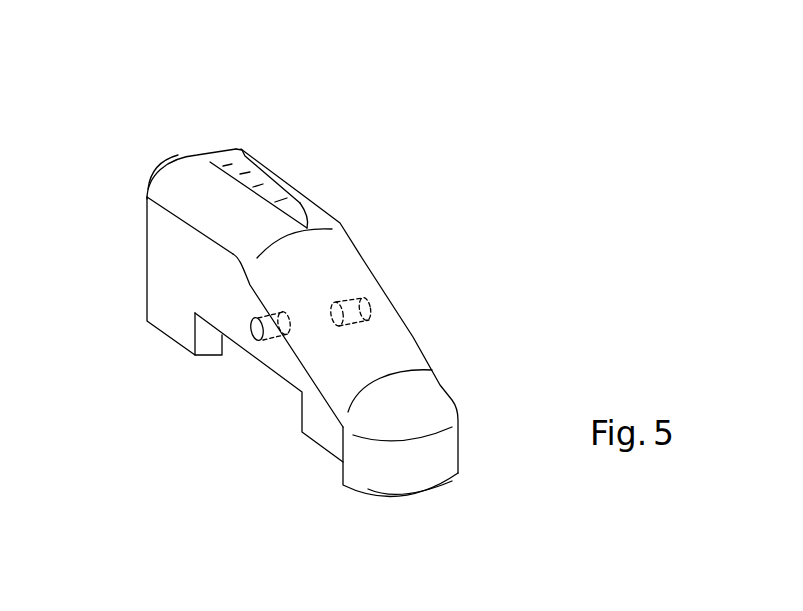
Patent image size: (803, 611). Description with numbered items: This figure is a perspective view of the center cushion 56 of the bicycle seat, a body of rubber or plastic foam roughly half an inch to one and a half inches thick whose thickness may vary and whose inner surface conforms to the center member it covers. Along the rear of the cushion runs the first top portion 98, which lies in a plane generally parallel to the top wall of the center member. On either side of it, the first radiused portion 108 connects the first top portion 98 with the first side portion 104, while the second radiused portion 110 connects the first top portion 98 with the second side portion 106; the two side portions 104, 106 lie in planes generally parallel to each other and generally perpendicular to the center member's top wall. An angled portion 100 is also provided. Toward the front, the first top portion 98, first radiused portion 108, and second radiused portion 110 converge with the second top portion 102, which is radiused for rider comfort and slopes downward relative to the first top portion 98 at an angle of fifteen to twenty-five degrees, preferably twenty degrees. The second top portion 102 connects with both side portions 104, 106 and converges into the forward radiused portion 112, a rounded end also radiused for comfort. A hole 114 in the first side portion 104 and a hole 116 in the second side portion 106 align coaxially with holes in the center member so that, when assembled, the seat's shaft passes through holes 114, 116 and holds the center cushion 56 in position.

The center cushion 56 is at (188, 121).
The first top portion 98 is at (258, 180).
The angled portion 100 is at (320, 214).
The second top portion 102 is at (393, 345).
The first side portion 104 is at (362, 258).
The second side portion 106 is at (170, 270).
The first radiused portion 108 is at (285, 178).
The second radiused portion 110 is at (190, 187).
The forward radiused portion 112 is at (412, 465).
The hole 114 is at (372, 292).
The hole 116 is at (254, 337).